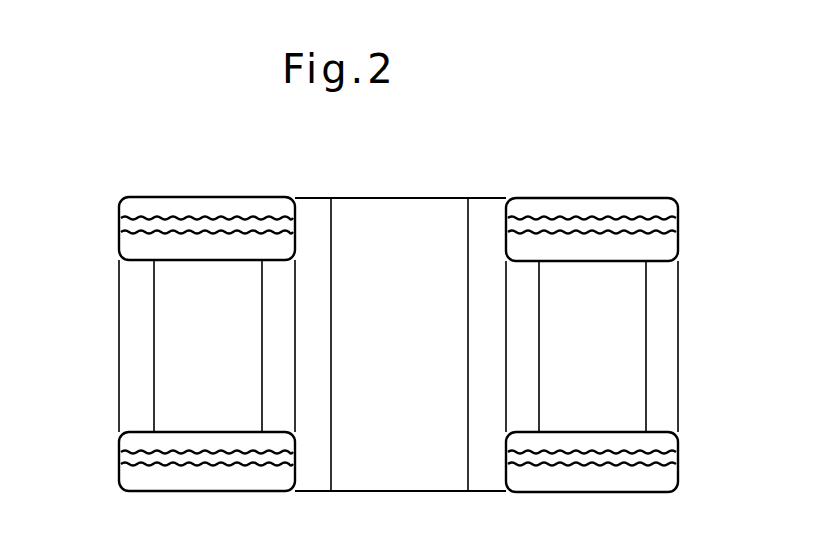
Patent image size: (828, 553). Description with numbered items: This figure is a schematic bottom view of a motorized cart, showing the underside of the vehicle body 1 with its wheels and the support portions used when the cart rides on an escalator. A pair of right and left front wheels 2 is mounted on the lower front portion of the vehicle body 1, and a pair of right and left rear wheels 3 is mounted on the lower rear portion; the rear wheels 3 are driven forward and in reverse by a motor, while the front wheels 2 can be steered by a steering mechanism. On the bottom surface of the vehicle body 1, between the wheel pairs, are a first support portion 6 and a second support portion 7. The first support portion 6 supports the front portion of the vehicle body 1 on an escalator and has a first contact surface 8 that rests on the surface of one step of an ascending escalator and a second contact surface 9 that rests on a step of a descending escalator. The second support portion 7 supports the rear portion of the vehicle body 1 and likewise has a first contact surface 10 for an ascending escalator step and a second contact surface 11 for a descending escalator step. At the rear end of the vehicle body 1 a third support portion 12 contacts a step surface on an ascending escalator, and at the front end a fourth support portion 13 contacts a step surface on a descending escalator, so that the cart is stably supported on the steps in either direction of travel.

The vehicle body 1 is at (411, 487).
The front wheels 2 is at (603, 207).
The rear wheels 3 is at (215, 207).
The first support portion 6 is at (496, 196).
The second support portion 7 is at (311, 197).
The first contact surface 8 is at (526, 345).
The second contact surface 9 is at (473, 338).
The first contact surface 10 is at (322, 328).
The second contact surface 11 is at (274, 338).
The third support portion 12 is at (128, 357).
The fourth support portion 13 is at (662, 343).